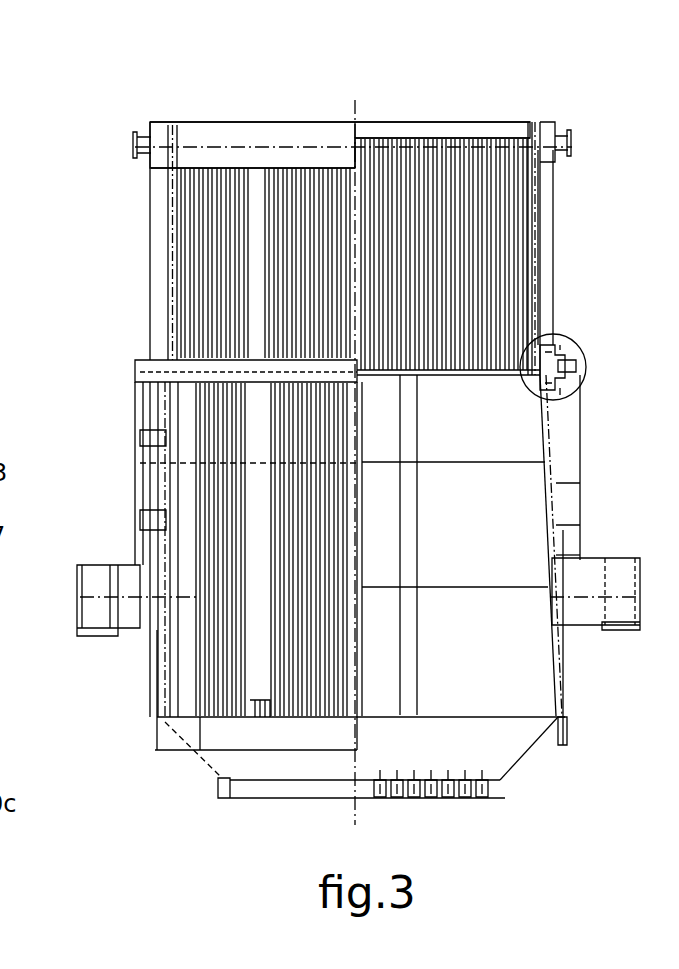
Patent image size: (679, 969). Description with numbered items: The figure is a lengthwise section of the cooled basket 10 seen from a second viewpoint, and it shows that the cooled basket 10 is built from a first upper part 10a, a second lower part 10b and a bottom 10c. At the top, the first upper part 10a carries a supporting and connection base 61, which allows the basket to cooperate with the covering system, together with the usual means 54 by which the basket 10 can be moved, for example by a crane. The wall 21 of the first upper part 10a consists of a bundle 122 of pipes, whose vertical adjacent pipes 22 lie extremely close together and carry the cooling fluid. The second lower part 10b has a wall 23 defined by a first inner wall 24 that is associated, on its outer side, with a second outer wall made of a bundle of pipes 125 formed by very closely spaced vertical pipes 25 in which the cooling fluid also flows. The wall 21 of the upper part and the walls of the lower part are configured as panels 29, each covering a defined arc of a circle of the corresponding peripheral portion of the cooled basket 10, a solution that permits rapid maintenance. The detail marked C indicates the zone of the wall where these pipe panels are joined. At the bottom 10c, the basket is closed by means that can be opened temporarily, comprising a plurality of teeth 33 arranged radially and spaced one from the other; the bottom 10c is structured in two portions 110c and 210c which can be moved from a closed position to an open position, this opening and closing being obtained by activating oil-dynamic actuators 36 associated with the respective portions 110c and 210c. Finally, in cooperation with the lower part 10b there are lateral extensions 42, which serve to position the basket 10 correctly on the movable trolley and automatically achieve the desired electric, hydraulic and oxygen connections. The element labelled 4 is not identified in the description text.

The cooled basket 10 is at (408, 102).
The supporting and connection base 61 is at (245, 118).
The means to move the basket 54 is at (564, 138).
The inlet pipe 4 is at (136, 146).
The first upper part 10a is at (128, 254).
The second lower part 10b is at (118, 544).
The bottom 10c is at (266, 824).
The bundle of pipes 122 is at (176, 256).
The panels 29 is at (190, 272).
The wall 21 is at (550, 204).
The vertical adjacent pipes 22 is at (537, 272).
The detail circle C is at (572, 310).
The wall 23 is at (556, 440).
The vertical pipes 25 is at (548, 466).
The first inner wall 24 is at (550, 506).
The lateral extensions 42 is at (118, 640).
The bundle of pipes 125 is at (150, 407).
The oil-dynamic actuators 36 is at (156, 456).
The first bottom portion 110c is at (170, 780).
The second bottom portion 210c is at (520, 774).
The teeth 33 is at (466, 792).